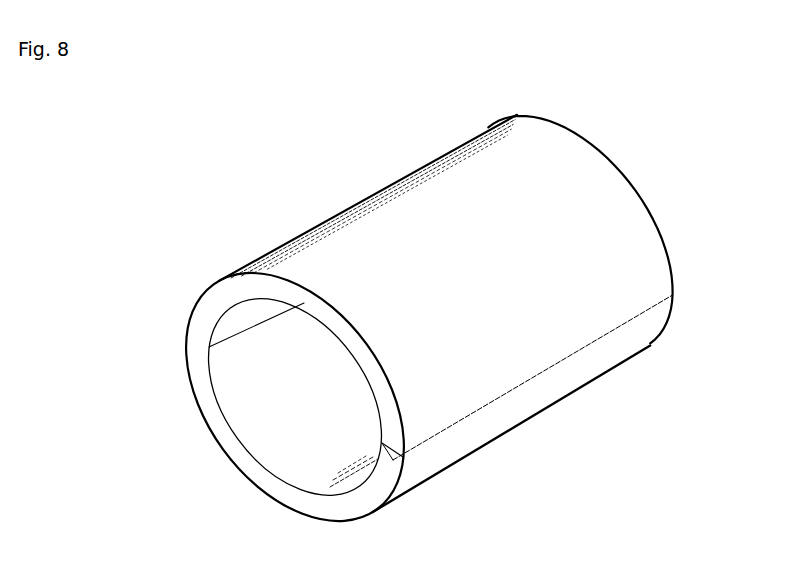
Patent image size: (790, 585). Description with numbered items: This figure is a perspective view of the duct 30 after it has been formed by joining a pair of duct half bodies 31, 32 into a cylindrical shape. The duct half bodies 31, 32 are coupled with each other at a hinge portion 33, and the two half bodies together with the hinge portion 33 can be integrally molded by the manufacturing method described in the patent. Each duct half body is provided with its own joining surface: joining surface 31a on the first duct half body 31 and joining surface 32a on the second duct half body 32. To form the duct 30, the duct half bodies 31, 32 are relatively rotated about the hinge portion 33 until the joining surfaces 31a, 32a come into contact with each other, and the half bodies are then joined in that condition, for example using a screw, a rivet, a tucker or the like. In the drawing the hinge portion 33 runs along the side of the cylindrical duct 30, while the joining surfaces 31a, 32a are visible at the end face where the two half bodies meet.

The duct 30 is at (403, 330).
The duct half body 31 is at (212, 440).
The duct half body 32 is at (203, 288).
The joining surface 31a is at (210, 347).
The joining surface 32a is at (400, 450).
The hinge portion 33 is at (547, 370).